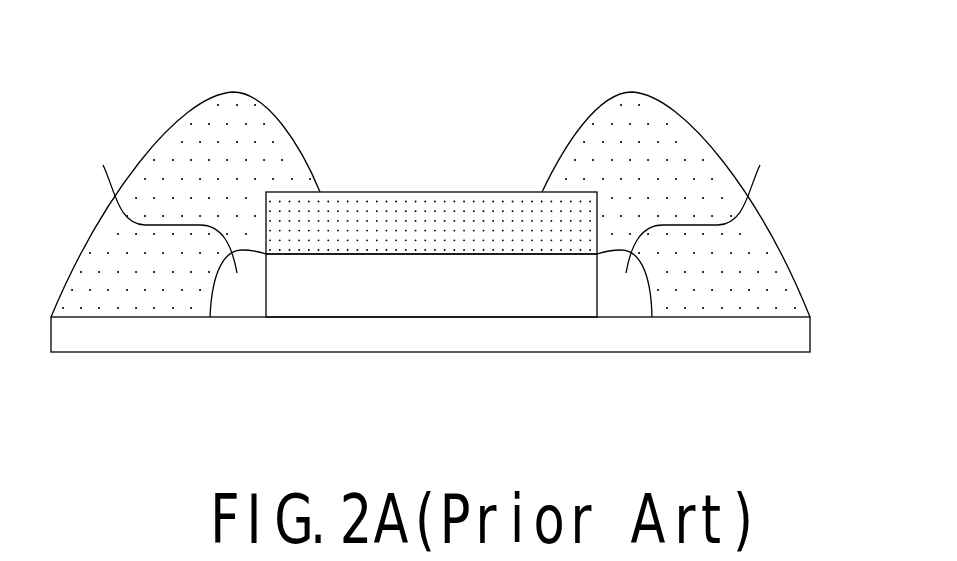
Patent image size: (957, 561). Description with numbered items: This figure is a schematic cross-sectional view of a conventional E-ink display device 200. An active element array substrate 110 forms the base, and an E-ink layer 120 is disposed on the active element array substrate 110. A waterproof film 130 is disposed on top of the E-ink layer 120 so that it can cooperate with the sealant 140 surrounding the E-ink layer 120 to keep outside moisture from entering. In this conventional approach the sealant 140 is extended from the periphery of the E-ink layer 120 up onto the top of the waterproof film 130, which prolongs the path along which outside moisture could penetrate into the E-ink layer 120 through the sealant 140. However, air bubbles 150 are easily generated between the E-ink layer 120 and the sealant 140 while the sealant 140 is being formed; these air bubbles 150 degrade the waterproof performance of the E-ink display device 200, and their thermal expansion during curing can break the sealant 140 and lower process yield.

The active element array substrate 110 is at (787, 337).
The E-ink layer 120 is at (473, 287).
The waterproof film 130 is at (340, 205).
The sealant 140 is at (229, 113).
The air bubbles 150 is at (431, 201).
The E-ink display device 200 is at (473, 240).